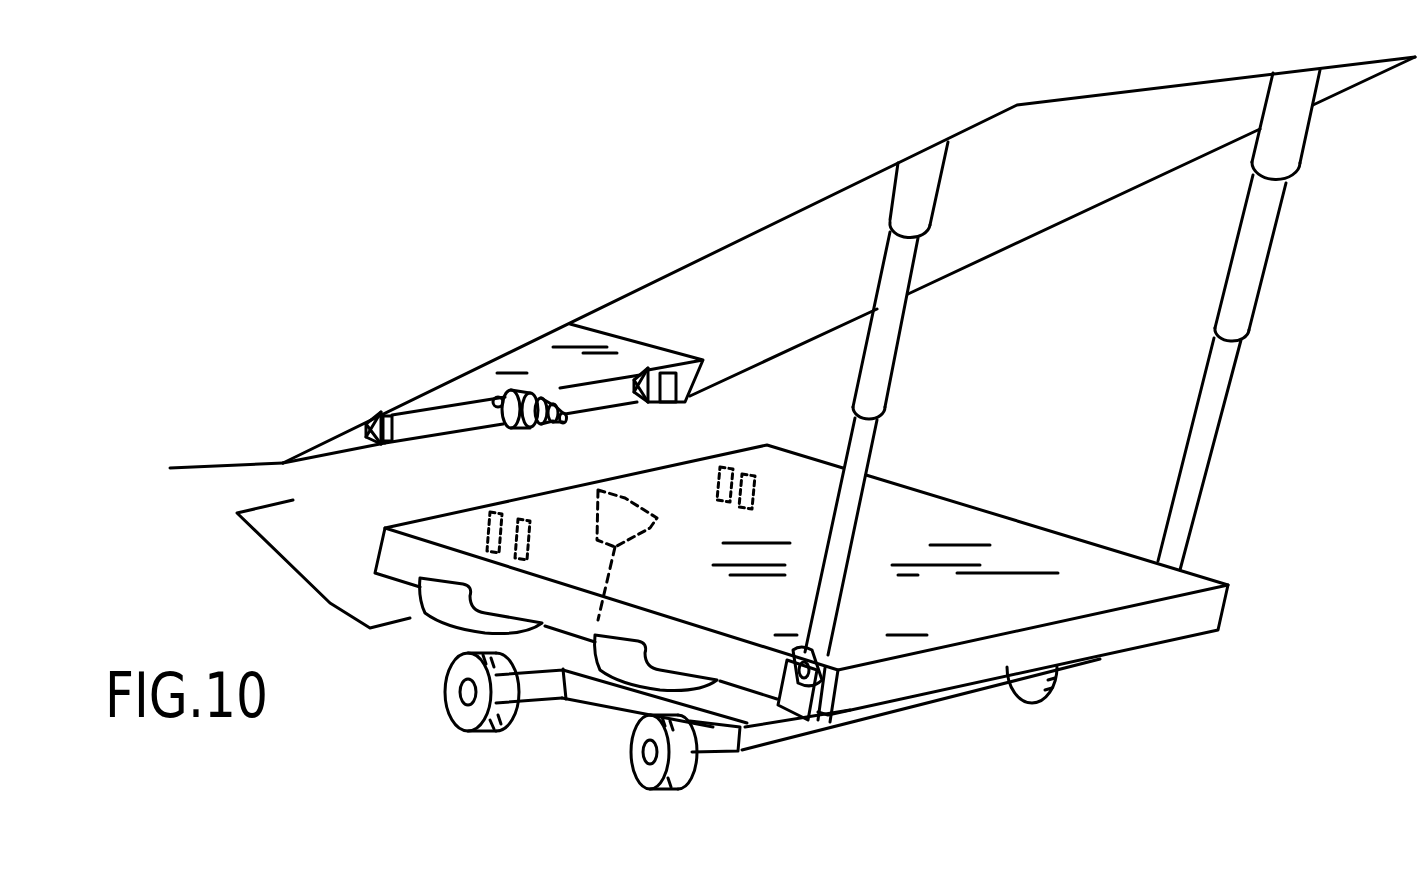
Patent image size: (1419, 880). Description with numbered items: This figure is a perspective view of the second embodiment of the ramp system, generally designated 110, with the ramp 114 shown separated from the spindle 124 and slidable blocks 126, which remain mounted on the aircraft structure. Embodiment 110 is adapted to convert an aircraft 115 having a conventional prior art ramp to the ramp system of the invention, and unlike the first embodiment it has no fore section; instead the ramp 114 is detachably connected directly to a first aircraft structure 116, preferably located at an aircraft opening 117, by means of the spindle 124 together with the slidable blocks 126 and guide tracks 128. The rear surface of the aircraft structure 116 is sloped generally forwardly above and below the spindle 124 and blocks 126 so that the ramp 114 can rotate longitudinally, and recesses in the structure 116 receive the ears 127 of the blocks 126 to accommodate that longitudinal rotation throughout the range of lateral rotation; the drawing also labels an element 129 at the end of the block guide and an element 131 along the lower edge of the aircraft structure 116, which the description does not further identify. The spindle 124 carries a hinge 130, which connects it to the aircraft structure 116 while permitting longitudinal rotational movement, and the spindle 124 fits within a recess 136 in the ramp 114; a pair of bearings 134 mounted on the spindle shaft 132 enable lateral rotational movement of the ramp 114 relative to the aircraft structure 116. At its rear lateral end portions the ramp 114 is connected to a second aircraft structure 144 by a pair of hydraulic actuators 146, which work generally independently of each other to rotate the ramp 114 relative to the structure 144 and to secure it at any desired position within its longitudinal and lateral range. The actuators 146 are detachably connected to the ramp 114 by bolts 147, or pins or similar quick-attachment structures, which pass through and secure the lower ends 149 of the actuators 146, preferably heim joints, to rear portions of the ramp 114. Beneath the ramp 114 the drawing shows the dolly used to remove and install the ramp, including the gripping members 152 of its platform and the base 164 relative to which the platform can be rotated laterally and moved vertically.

The second embodiment of the ramp system 110 is at (178, 621).
The ramp 114 is at (1000, 517).
The aircraft 115 is at (178, 488).
The first aircraft structure 116 is at (250, 438).
The aircraft opening 117 is at (1036, 240).
The spindle 124 is at (543, 376).
The slidable blocks 126 is at (395, 434).
The ears 127 is at (367, 415).
The guide tracks 128 is at (765, 472).
The rail end bracket 129 is at (655, 368).
The hinge 130 is at (506, 430).
The base edge 131 is at (332, 447).
The spindle shaft 132 is at (568, 420).
The bearings 134 is at (538, 386).
The recess 136 is at (598, 620).
The second aircraft structure 144 is at (1192, 133).
The hydraulic actuators 146 is at (1213, 345).
The bolts 147 is at (832, 668).
The lower ends of the actuators 149 is at (832, 717).
The gripping members 152 is at (443, 607).
The base 164 is at (775, 725).